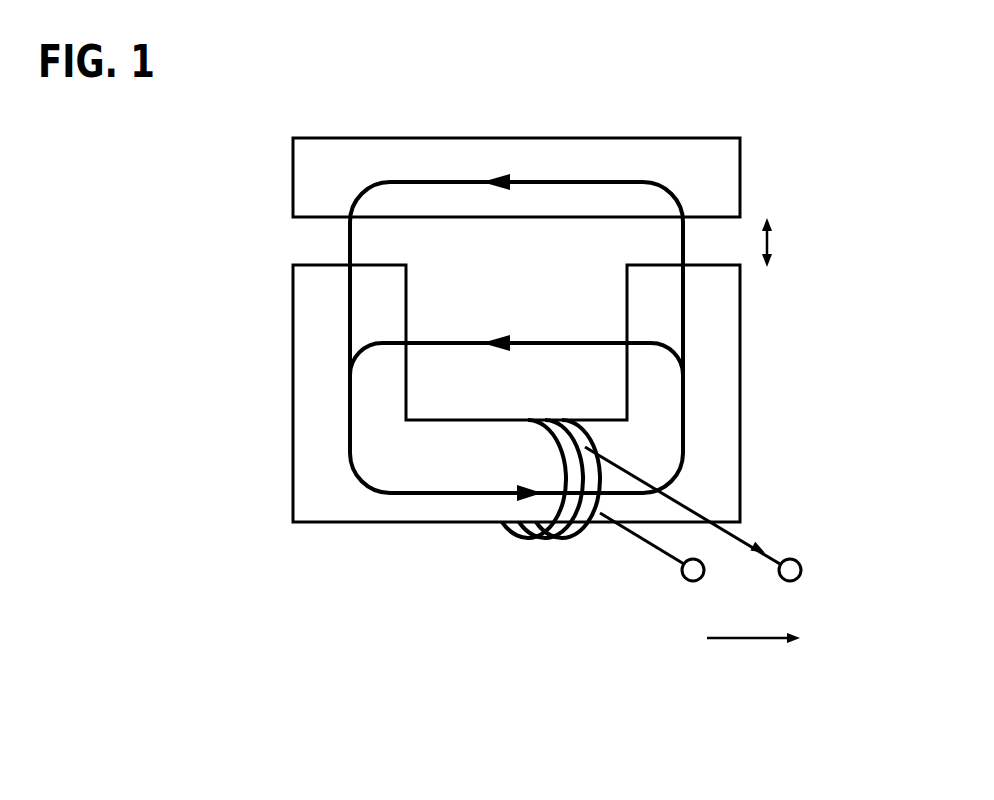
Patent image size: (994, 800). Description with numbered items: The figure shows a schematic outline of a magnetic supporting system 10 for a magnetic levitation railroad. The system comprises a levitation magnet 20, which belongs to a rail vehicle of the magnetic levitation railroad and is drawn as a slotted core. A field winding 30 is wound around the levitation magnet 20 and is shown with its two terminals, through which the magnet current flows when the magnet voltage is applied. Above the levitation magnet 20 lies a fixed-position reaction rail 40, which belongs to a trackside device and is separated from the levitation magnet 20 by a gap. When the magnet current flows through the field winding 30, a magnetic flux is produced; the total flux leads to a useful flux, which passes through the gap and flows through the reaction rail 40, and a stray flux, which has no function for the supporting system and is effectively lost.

The magnetic supporting system 10 is at (560, 408).
The levitation magnet 20 is at (728, 417).
The field winding 30 is at (562, 540).
The reaction rail 40 is at (307, 178).